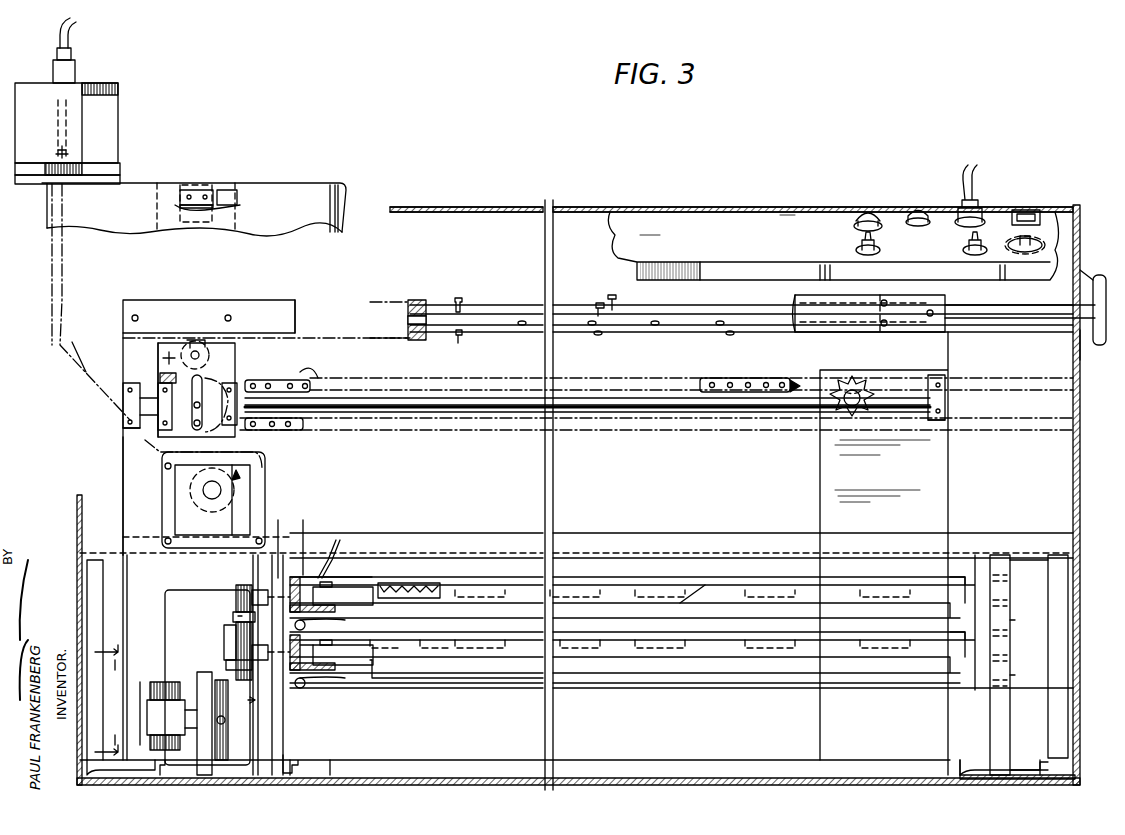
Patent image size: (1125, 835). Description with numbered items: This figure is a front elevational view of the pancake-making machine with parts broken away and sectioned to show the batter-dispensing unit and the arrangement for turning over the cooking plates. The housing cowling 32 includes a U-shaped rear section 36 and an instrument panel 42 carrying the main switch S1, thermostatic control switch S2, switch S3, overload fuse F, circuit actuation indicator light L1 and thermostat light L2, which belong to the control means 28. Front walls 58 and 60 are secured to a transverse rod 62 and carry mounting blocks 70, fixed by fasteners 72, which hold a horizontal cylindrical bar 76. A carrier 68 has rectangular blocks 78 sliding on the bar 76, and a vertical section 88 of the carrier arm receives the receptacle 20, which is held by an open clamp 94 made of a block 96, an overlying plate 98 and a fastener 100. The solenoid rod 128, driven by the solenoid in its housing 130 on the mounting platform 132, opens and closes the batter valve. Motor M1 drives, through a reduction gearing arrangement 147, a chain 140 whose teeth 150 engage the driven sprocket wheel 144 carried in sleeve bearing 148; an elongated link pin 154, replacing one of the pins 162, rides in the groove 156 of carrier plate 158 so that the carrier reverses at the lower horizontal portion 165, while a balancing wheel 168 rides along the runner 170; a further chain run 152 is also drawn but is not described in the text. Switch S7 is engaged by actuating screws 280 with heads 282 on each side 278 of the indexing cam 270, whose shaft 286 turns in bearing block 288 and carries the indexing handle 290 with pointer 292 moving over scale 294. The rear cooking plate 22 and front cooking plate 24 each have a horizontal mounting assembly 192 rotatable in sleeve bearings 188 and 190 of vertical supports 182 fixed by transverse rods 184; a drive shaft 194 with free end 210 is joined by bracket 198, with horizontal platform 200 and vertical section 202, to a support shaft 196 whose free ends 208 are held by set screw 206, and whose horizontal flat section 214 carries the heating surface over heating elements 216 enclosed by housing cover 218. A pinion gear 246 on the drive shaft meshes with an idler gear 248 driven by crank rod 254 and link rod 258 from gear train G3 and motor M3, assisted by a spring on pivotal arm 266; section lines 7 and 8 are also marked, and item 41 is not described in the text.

The receptacle 20 is at (346, 192).
The rear cooking plate 22 is at (711, 577).
The front cooking plate 24 is at (735, 632).
The control means 28 is at (158, 612).
The housing cowling 32 is at (1080, 506).
The rear section 36 is at (1078, 460).
The motor mount 41 is at (262, 507).
The instrument panel 42 is at (821, 210).
The front wall 58 is at (123, 462).
The front wall 60 is at (940, 444).
The transverse rod 62 is at (624, 532).
The carrier 68 is at (152, 342).
The mounting blocks 70 is at (123, 405).
The fasteners 72 is at (130, 425).
The horizontal cylindrical bar 76 is at (470, 415).
The rectangular blocks 78 is at (158, 390).
The vertical section 88 is at (232, 190).
The open clamp 94 is at (228, 176).
The block 96 is at (205, 190).
The overlying plate 98 is at (200, 190).
The fastener 100 is at (215, 205).
The solenoid rod 128 is at (68, 277).
The solenoid housing 130 is at (118, 115).
The mounting platform 132 is at (120, 175).
The chain 140 is at (316, 370).
The driven sprocket wheel 144 is at (868, 372).
The reduction gearing arrangement 147 is at (245, 477).
The sleeve bearing 148 is at (878, 395).
The teeth 150 is at (845, 415).
The lower chain 152 is at (270, 430).
The elongated link pin 154 is at (200, 395).
The groove 156 is at (160, 462).
The carrier plate 158 is at (170, 343).
The pins 162 is at (312, 378).
The lower horizontal portion 165 is at (368, 432).
The balancing wheel 168 is at (205, 340).
The runner 170 is at (276, 312).
The vertical supports 182 is at (285, 738).
The transverse rods 184 is at (285, 765).
The sleeve bearing 188 is at (282, 543).
The sleeve bearing 190 is at (1028, 645).
The horizontal mounting assembly 192 is at (495, 608).
The drive shaft 194 is at (262, 590).
The support shaft 196 is at (978, 582).
The bracket 198 is at (336, 540).
The horizontal platform 200 is at (315, 625).
The vertical section 202 is at (330, 580).
The set screw 206 is at (338, 556).
The free ends 208 is at (330, 592).
The free end 210 is at (306, 542).
The horizontal flat section 214 is at (698, 600).
The heating elements 216 is at (465, 598).
The housing cover 218 is at (432, 680).
The pinion gear 246 is at (236, 592).
The idler gear 248 is at (236, 616).
The crank rod 254 is at (224, 635).
The link rod 258 is at (230, 765).
The pivotal arm 266 is at (405, 598).
The indexing cam 270 is at (688, 334).
The side 278 is at (640, 310).
The actuating screws 280 is at (612, 295).
The screw head 282 is at (462, 300).
The shaft 286 is at (1020, 322).
The bearing block 288 is at (416, 300).
The indexing handle 290 is at (1100, 346).
The pointer 292 is at (1078, 285).
The scale 294 is at (1075, 345).
The section line 7 is at (236, 618).
The section line 8 is at (108, 700).
The motor M1 is at (210, 499).
The motor M3 is at (158, 676).
The gear train G3 is at (205, 760).
The main switch S1 is at (856, 241).
The thermostatic control switch S2 is at (1032, 255).
The switch S3 is at (963, 242).
The switch S7 is at (163, 358).
The circuit actuation indicator light L1 is at (872, 210).
The thermostat light L2 is at (1030, 210).
The overload fuse F is at (922, 210).